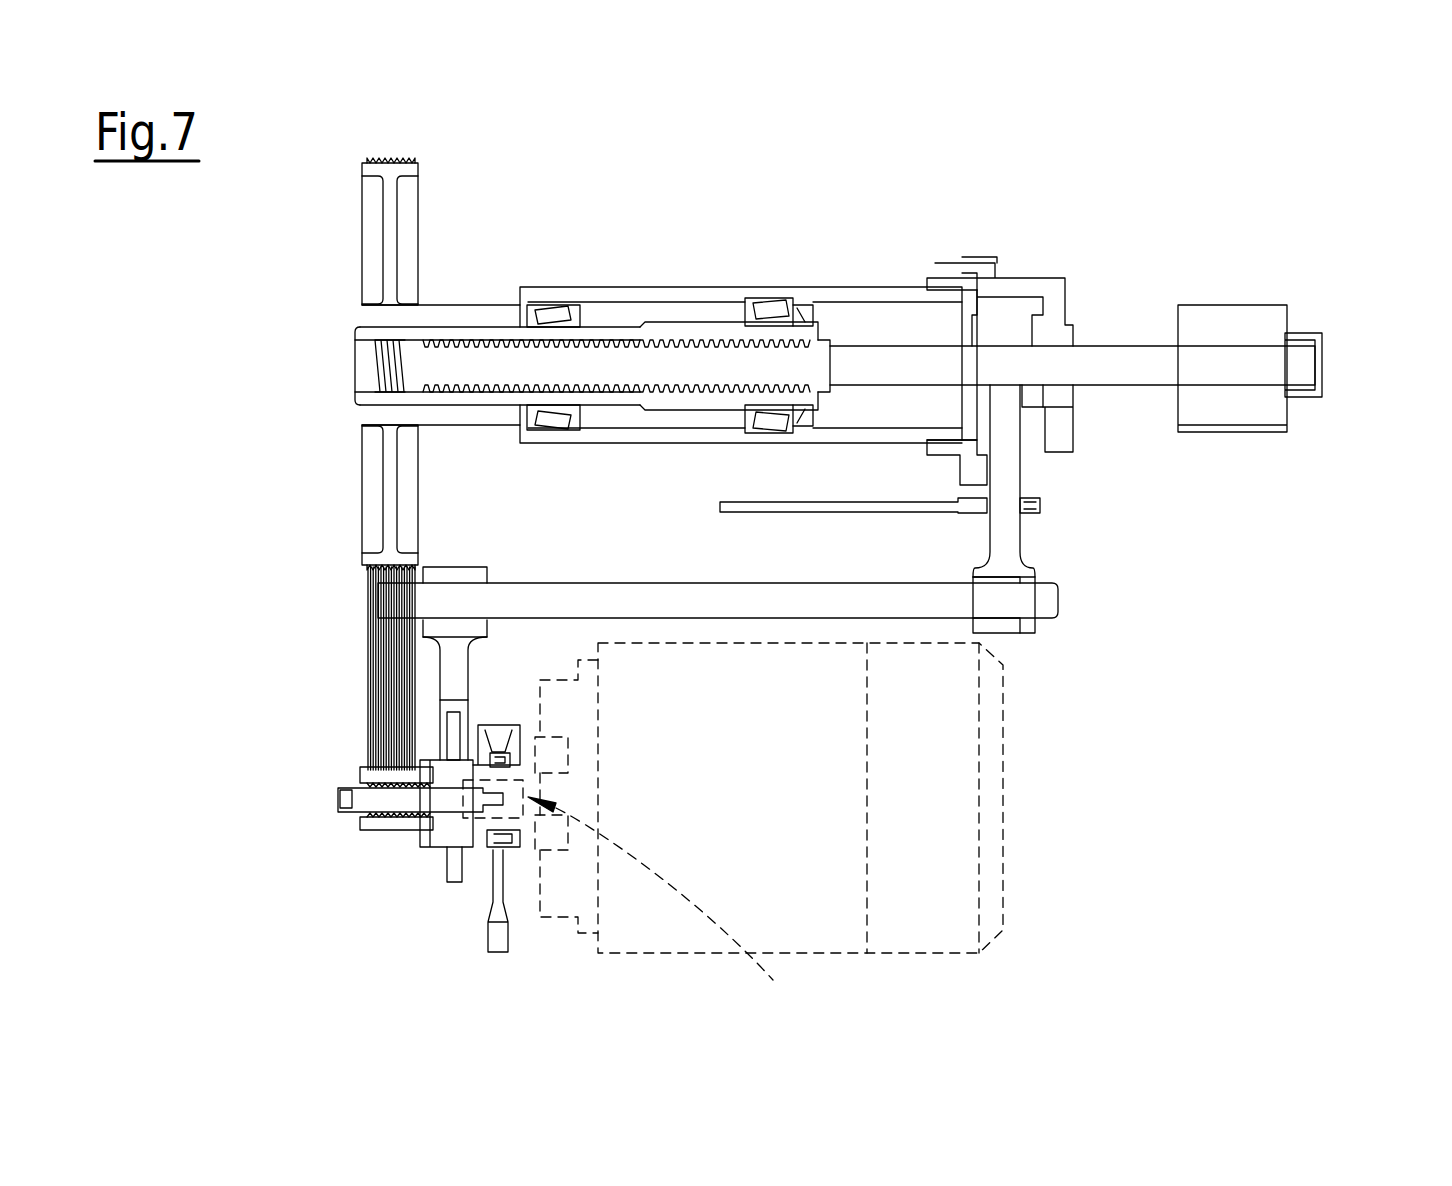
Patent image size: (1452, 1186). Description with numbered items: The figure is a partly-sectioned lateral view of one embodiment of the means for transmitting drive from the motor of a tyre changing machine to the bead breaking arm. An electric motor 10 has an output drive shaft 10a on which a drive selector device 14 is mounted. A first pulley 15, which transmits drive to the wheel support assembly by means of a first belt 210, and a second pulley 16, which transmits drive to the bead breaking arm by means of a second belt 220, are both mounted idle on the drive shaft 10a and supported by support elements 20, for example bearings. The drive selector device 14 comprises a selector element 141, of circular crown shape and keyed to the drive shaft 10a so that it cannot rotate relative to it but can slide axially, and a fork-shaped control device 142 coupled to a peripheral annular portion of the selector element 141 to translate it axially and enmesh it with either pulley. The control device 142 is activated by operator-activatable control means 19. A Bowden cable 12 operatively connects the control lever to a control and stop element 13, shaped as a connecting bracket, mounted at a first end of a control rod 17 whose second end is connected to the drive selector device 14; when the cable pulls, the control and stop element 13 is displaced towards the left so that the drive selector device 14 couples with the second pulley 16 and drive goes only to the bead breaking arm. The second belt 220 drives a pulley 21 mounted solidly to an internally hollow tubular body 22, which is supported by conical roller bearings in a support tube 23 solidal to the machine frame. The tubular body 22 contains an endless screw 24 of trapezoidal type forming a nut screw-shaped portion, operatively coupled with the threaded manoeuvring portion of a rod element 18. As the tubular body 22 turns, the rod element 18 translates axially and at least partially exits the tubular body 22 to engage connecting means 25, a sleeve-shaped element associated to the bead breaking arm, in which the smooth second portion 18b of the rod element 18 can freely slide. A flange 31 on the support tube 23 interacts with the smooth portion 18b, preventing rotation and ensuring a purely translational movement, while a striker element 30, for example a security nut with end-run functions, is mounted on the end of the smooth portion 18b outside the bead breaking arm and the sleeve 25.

The pulley 21 is at (430, 165).
The tubular body 22 is at (477, 330).
The support tube 23 is at (671, 296).
The endless screw 24 is at (720, 335).
The rod element 18 is at (865, 363).
The second portion 18b is at (1110, 345).
The connecting means 25 is at (1236, 312).
The striker element 30 is at (1340, 318).
The flange 31 is at (1060, 425).
The control and stop element 13 is at (1010, 468).
The Bowden cable 12 is at (880, 518).
The control rod 17 is at (638, 592).
The control means 19 is at (1112, 568).
The second belt 220 is at (368, 582).
The control device 142 is at (453, 662).
The selector element 141 is at (422, 725).
The support elements 20 is at (455, 722).
The electric motor 10 is at (1015, 780).
The drive shaft 10a is at (773, 980).
The second pulley 16 is at (433, 860).
The drive selector device 14 is at (330, 898).
The first belt 210 is at (490, 938).
The first pulley 15 is at (515, 862).